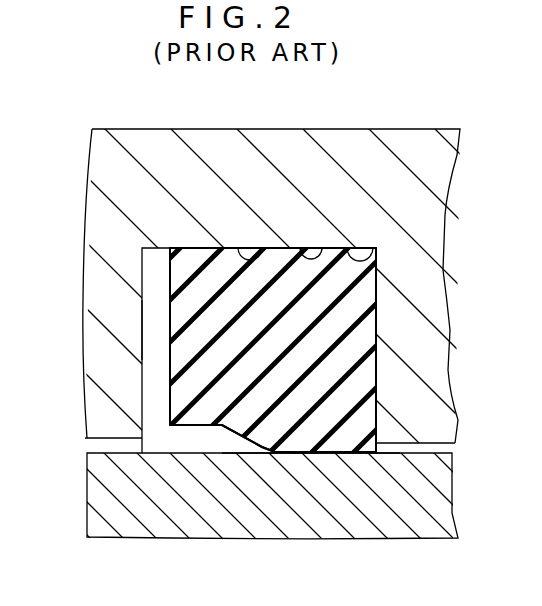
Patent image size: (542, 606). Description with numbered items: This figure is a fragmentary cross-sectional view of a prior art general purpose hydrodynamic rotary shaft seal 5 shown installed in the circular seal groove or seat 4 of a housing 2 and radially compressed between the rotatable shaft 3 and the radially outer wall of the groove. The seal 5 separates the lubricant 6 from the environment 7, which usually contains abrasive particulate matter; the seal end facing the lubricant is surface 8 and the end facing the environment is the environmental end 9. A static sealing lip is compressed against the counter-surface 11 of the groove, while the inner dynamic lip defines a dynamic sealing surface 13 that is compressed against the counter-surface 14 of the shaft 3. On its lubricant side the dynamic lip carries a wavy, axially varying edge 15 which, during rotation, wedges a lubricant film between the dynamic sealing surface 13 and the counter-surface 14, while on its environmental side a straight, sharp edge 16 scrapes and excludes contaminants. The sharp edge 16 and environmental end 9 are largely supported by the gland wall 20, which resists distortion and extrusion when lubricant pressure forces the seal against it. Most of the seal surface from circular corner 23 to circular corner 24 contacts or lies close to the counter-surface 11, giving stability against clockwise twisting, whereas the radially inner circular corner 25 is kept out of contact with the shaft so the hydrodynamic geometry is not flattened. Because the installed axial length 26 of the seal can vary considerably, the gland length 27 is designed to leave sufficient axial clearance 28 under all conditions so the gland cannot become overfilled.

The housing 2 is at (122, 245).
The rotatable shaft 3 is at (123, 518).
The seal groove 4 is at (155, 368).
The seal 5 is at (305, 378).
The lubricant 6 is at (217, 442).
The environment 7 is at (422, 447).
The lubricant-side surface 8 is at (160, 333).
The environmental end 9 is at (377, 312).
The counter-surface of the groove 11 is at (300, 248).
The dynamic sealing surface 13 is at (328, 453).
The counter-surface of the shaft 14 is at (117, 450).
The wavy, axially varying edge 15 is at (252, 453).
The sharp edge 16 is at (378, 453).
The gland wall 20 is at (352, 248).
The circular corner 23 is at (170, 270).
The circular corner 24 is at (379, 247).
The radially inner circular corner 25 is at (170, 425).
The installed axial length 26 is at (376, 292).
The gland length 27 is at (376, 350).
The axial clearance 28 is at (203, 263).